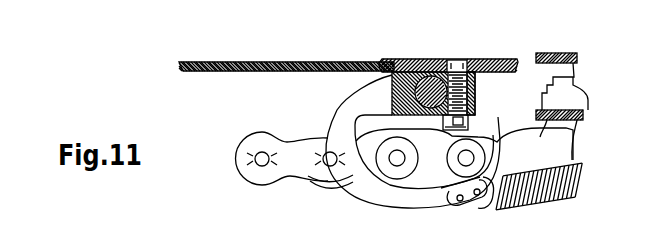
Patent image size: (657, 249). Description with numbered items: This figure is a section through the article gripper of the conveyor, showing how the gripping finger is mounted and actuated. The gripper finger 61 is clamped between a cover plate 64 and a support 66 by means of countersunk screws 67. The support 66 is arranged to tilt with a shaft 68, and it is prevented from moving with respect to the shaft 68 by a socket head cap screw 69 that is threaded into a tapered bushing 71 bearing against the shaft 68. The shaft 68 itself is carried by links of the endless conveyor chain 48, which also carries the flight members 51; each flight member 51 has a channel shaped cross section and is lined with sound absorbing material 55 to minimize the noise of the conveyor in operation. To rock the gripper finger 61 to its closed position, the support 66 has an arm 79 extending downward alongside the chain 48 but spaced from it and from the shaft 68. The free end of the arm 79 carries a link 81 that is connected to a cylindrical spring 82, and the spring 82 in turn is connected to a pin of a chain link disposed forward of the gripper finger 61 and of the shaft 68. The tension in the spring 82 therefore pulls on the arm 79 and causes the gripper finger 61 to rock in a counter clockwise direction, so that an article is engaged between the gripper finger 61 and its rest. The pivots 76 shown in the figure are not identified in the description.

The gripper finger 61 is at (321, 62).
The support 66 is at (393, 64).
The countersunk screws 67 is at (412, 62).
The cover plate 64 is at (428, 60).
The shaft 68 is at (455, 62).
The socket head cap screw 69 is at (470, 65).
The tapered bushing 71 is at (468, 82).
The flight member 51 is at (563, 53).
The arm 79 is at (337, 108).
The pivot 76 is at (398, 157).
The conveyor chain 48 is at (292, 174).
The sound absorbing material 55 is at (440, 188).
The link 81 is at (468, 206).
The spring 82 is at (522, 196).